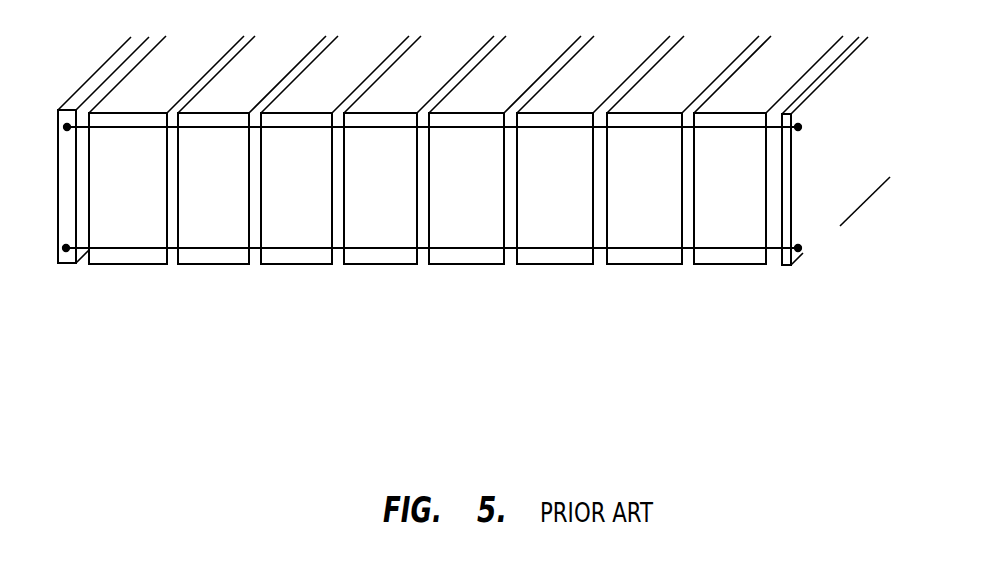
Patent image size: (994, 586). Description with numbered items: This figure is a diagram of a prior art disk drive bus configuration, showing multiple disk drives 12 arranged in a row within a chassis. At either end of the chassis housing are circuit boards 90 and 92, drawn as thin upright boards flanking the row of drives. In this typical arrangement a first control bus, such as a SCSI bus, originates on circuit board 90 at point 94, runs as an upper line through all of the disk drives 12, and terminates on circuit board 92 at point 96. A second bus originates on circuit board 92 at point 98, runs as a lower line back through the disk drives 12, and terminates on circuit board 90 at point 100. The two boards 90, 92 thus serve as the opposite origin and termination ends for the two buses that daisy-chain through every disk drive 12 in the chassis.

The disk drive 12 is at (466, 150).
The circuit board 90 is at (100, 77).
The circuit board 92 is at (827, 82).
The point 94 is at (67, 128).
The point 96 is at (798, 128).
The point 98 is at (798, 248).
The point 100 is at (66, 247).